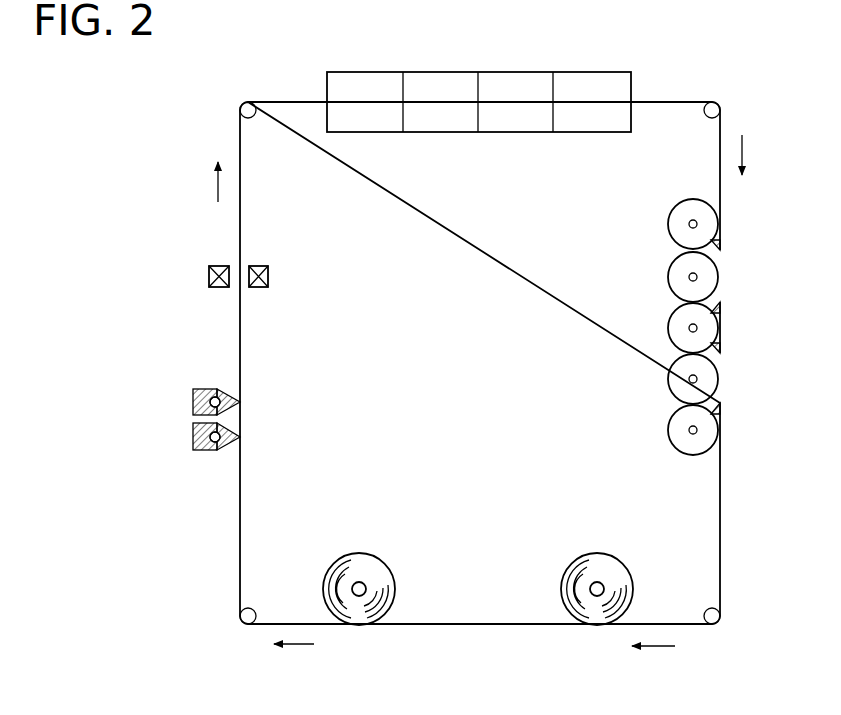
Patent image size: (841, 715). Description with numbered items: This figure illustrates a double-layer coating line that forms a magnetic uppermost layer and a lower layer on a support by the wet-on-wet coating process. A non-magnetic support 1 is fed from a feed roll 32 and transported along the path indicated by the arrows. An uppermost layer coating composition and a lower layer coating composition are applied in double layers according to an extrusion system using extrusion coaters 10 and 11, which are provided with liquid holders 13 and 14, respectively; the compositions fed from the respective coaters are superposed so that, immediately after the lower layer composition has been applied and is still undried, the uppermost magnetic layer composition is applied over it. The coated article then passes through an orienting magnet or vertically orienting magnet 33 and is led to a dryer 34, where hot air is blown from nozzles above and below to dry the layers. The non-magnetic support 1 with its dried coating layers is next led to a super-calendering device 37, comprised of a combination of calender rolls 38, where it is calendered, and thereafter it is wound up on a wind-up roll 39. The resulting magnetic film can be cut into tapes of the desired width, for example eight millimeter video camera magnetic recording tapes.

The non-magnetic support 1 is at (240, 490).
The extrusion coater 10 is at (193, 439).
The extrusion coater 11 is at (193, 404).
The liquid holder 13 is at (215, 452).
The liquid holder 14 is at (215, 396).
The feed roll 32 is at (359, 581).
The orienting magnet 33 is at (268, 274).
The dryer 34 is at (465, 137).
The super-calendering device 37 is at (645, 279).
The calender rolls 38 is at (676, 224).
The wind-up roll 39 is at (597, 581).